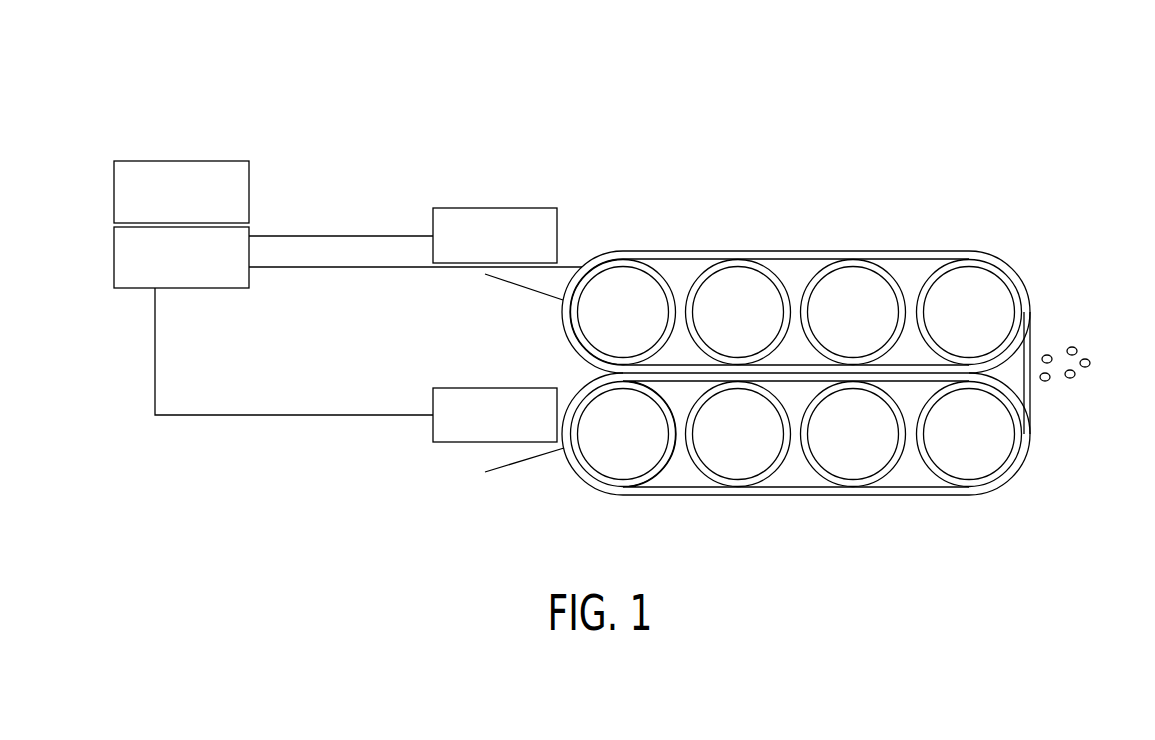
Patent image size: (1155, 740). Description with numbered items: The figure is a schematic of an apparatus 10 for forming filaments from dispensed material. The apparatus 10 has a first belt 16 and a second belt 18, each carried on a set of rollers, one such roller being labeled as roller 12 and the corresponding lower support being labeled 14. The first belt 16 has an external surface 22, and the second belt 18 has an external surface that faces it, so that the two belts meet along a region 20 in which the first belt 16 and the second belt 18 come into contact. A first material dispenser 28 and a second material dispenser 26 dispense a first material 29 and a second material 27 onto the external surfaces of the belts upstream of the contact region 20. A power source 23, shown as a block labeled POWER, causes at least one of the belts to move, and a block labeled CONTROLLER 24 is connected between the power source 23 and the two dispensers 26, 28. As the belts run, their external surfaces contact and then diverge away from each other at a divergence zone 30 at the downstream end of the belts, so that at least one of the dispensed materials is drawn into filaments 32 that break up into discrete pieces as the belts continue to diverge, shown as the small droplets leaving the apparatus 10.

The battery system 10 is at (1095, 142).
The battery cell 12 is at (988, 258).
The lower housing inner wall 14 is at (1032, 437).
The upper housing 16 is at (665, 252).
The lower housing 18 is at (683, 496).
The shared partition wall 20 is at (610, 373).
The cell cavity 22 is at (675, 365).
The power source 23 is at (114, 192).
The controller 24 is at (114, 257).
The lower dispenser 26 is at (433, 400).
The lower conduit 27 is at (530, 458).
The upper dispenser 28 is at (433, 222).
The upper conduit 29 is at (516, 285).
The vent outlet 30 is at (1032, 342).
The dispensed particles 32 is at (1090, 362).